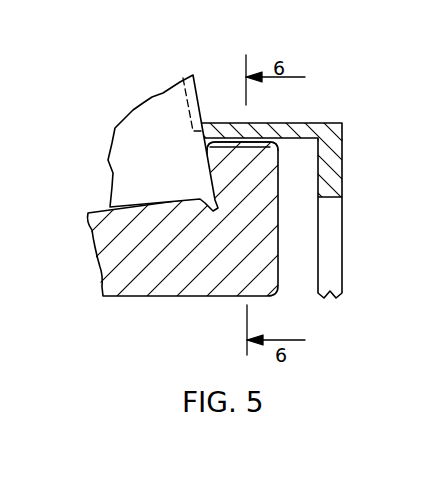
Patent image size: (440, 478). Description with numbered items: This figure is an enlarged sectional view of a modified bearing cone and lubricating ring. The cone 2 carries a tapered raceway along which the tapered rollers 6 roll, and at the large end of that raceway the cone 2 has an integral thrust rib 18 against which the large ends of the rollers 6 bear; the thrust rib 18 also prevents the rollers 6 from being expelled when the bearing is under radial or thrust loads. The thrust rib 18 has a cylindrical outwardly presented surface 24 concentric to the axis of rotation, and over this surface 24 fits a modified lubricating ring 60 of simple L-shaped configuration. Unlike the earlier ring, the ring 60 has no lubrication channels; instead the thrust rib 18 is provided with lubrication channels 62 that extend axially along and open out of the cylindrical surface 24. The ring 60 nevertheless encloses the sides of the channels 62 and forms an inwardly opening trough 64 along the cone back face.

The cone 2 is at (200, 282).
The tapered rollers 6 is at (138, 148).
The thrust rib 18 is at (243, 177).
The cylindrical outwardly presented surface 24 is at (234, 136).
The modified lubricating ring 60 is at (285, 185).
The lubrication channels 62 is at (283, 132).
The inwardly opening trough 64 is at (295, 158).